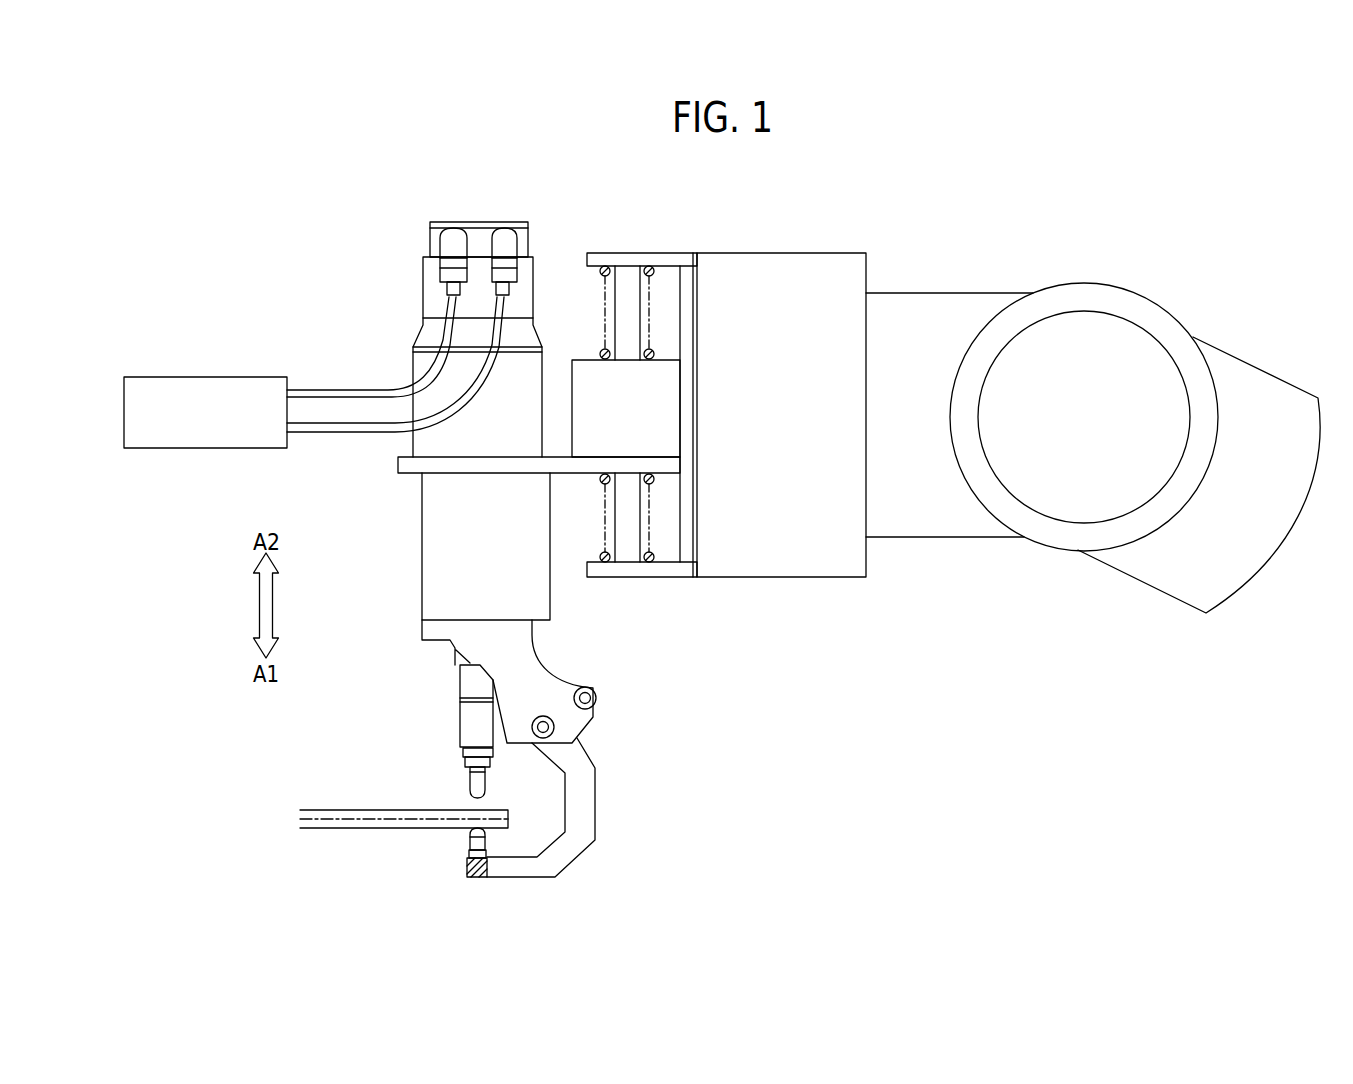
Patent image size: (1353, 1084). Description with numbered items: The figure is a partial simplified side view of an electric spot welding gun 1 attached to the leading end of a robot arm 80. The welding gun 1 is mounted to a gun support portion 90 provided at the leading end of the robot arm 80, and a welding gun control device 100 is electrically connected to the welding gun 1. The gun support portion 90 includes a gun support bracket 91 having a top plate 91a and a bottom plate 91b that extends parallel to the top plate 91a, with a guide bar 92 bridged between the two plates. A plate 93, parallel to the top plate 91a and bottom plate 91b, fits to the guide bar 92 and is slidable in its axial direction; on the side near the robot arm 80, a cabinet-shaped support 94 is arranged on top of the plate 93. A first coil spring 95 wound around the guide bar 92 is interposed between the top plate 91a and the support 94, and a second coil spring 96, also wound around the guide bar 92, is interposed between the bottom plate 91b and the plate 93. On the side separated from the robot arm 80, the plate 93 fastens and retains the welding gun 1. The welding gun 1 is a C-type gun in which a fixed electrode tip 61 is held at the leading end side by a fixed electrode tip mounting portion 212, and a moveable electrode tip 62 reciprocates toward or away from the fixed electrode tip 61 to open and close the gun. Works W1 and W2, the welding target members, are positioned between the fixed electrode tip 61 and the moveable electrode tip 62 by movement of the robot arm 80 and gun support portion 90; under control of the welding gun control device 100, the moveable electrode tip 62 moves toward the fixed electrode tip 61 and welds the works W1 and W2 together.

The electric spot welding gun 1 is at (386, 526).
The fixed electrode tip 61 is at (470, 841).
The moveable electrode tip 62 is at (473, 780).
The robot arm 80 is at (775, 264).
The gun support portion 90 is at (660, 414).
The gun support bracket 91 is at (655, 406).
The top plate 91a is at (640, 256).
The bottom plate 91b is at (652, 575).
The guide bar 92 is at (632, 298).
The plate 93 is at (666, 464).
The support 94 is at (666, 412).
The first coil spring 95 is at (655, 353).
The second coil spring 96 is at (655, 555).
The welding gun control device 100 is at (233, 375).
The fixed electrode tip mounting portion 212 is at (587, 805).
The work W1 is at (320, 809).
The work W2 is at (337, 830).